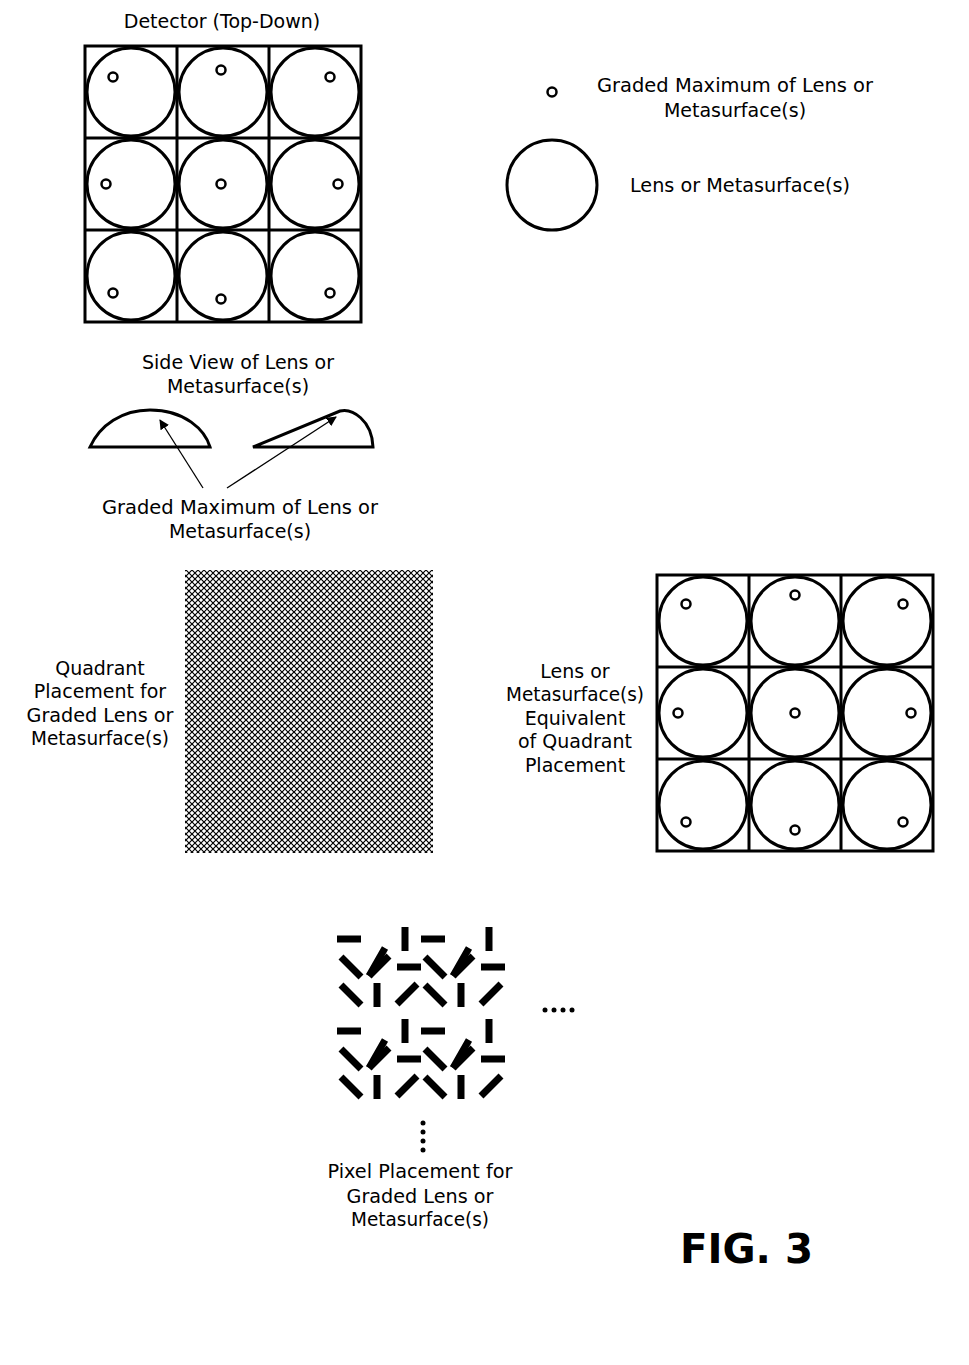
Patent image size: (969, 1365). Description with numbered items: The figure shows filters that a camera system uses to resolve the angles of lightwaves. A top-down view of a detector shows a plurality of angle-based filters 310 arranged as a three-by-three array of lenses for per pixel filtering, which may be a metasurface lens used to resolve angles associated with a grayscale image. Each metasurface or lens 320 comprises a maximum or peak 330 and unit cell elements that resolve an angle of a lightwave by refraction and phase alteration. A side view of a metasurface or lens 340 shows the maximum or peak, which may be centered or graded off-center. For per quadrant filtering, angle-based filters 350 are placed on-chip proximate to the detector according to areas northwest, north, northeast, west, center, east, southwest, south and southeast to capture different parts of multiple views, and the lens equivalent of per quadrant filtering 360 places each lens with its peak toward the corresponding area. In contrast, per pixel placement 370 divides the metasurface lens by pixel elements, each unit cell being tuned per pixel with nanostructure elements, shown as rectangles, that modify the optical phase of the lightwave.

The angle-based filters 310 is at (85, 205).
The metasurface or lens 320 is at (566, 229).
The maximum or peak 330 is at (556, 88).
The side view of metasurface or lens 340 is at (374, 430).
The angle-based filters for per quadrant filtering 350 is at (409, 570).
The lens equivalent of per quadrant filtering 360 is at (737, 575).
The per pixel placement 370 is at (512, 942).